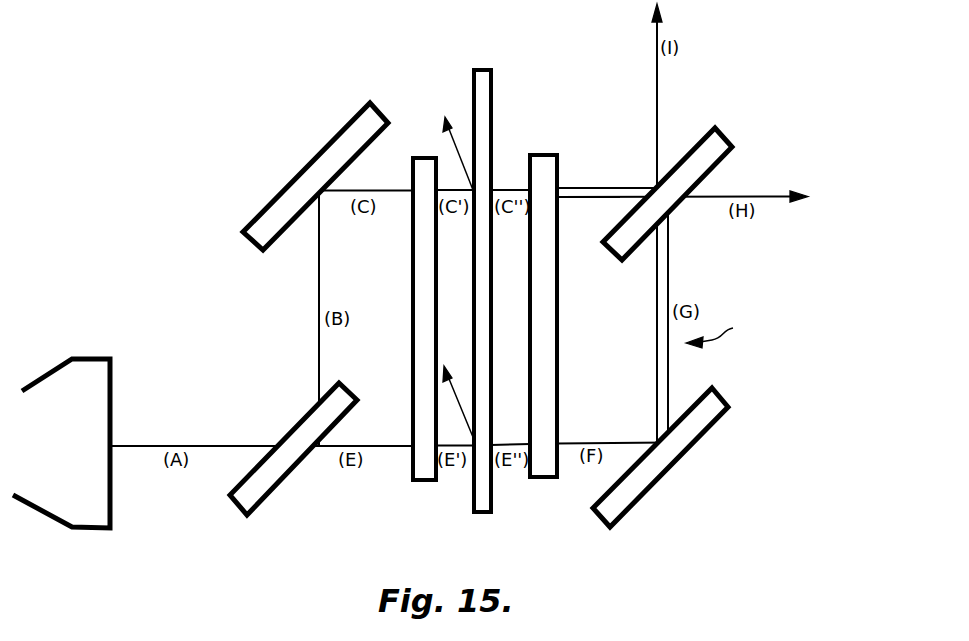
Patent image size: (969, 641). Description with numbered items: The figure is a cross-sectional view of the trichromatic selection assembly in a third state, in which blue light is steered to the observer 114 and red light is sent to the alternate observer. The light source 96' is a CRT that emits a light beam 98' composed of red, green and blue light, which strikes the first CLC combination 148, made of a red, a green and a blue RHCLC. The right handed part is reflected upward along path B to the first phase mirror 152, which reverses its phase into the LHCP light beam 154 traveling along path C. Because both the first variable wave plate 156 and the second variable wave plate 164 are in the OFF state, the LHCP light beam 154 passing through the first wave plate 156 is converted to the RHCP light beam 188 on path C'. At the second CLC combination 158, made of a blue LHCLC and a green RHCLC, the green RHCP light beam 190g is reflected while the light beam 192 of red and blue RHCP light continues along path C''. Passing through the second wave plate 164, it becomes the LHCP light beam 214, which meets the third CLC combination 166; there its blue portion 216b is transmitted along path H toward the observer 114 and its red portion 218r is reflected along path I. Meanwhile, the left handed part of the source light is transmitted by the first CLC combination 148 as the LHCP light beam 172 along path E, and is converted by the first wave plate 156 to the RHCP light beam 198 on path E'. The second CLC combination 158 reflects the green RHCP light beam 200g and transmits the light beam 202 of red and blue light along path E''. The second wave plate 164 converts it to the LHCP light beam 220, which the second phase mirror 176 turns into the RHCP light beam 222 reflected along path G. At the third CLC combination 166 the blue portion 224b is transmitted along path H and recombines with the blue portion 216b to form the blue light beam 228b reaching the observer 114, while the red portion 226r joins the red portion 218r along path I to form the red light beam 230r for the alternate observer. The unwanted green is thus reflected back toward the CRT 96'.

The light source 96' is at (61, 423).
The light beam 98' is at (205, 416).
The observer 114 is at (818, 196).
The first CLC combination 148 is at (240, 505).
The first phase mirror 152 is at (323, 150).
The LHCP light beam 154 is at (400, 192).
The first variable wave plate 156 is at (420, 157).
The second CLC combination 158 is at (480, 70).
The second variable wave plate 164 is at (567, 188).
The third CLC combination 166 is at (722, 138).
The LHCP light beam 172 is at (400, 446).
The second phase mirror 176 is at (632, 508).
The RHCP light beam 188 is at (448, 180).
The green RHCP light beam 190g is at (463, 142).
The light beam 192 is at (515, 192).
The RHCP light beam 198 is at (452, 437).
The green RHCP light beam 200g is at (448, 402).
The light beam 202 is at (507, 442).
The LHCP light beam 214 is at (575, 186).
The blue portion 216b is at (618, 198).
The red portion 218r is at (585, 196).
The LHCP light beam 220 is at (630, 441).
The RHCP light beam 222 is at (731, 335).
The blue portion 224b is at (668, 267).
The red portion 226r is at (657, 332).
The blue light beam 228b is at (733, 196).
The red light beam 230r is at (658, 93).